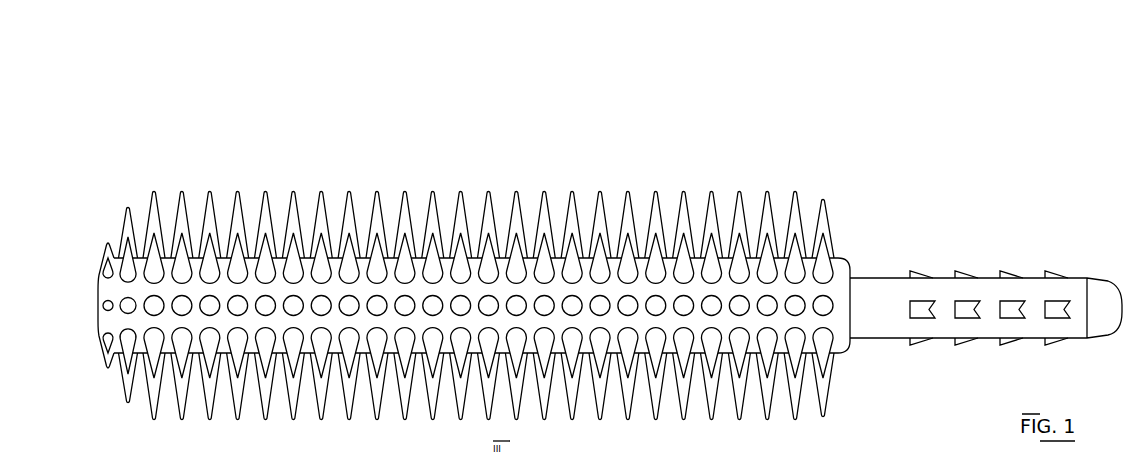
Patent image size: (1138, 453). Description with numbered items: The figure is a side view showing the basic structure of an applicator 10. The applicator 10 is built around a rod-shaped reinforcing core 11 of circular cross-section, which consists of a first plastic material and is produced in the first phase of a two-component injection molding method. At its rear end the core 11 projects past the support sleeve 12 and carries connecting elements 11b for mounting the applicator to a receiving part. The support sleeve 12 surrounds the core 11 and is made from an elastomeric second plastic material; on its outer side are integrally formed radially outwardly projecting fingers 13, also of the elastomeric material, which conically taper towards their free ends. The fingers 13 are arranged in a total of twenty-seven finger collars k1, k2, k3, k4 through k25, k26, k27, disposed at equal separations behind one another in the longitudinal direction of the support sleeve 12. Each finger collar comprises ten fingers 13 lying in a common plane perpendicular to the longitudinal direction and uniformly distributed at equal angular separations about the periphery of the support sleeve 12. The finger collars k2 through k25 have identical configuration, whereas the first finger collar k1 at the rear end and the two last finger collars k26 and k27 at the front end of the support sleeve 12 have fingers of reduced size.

The applicator 10 is at (596, 222).
The reinforcing core 11 is at (874, 289).
The connecting elements 11b is at (1014, 311).
The support sleeve 12 is at (841, 342).
The fingers 13 is at (458, 262).
The first finger collar k1 is at (826, 198).
The second finger collar k2 is at (797, 189).
The third finger collar k3 is at (768, 189).
The fourth finger collar k4 is at (740, 189).
The twenty-fifth finger collar k25 is at (156, 186).
The twenty-sixth finger collar k26 is at (127, 202).
The twenty-seventh finger collar k27 is at (105, 236).